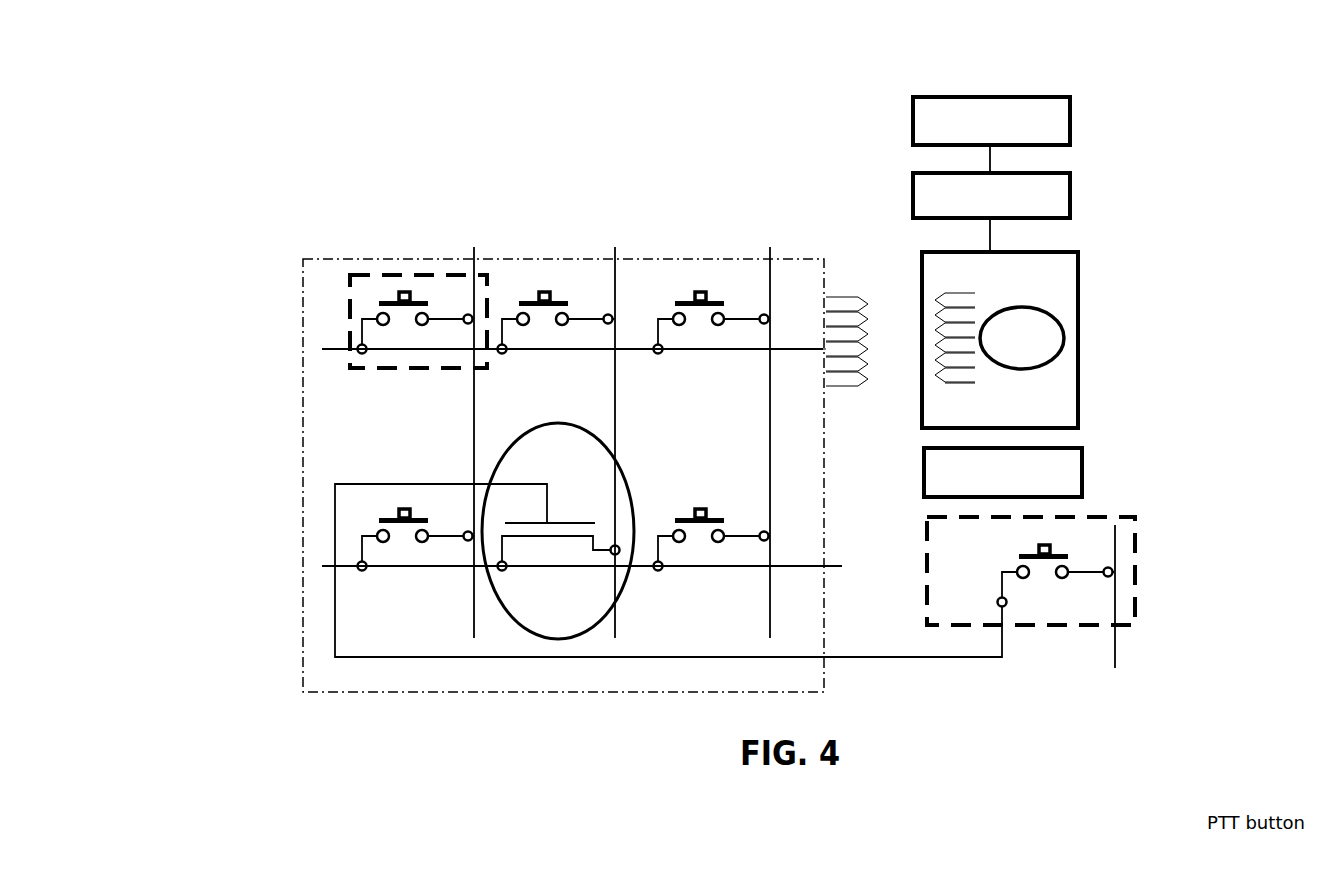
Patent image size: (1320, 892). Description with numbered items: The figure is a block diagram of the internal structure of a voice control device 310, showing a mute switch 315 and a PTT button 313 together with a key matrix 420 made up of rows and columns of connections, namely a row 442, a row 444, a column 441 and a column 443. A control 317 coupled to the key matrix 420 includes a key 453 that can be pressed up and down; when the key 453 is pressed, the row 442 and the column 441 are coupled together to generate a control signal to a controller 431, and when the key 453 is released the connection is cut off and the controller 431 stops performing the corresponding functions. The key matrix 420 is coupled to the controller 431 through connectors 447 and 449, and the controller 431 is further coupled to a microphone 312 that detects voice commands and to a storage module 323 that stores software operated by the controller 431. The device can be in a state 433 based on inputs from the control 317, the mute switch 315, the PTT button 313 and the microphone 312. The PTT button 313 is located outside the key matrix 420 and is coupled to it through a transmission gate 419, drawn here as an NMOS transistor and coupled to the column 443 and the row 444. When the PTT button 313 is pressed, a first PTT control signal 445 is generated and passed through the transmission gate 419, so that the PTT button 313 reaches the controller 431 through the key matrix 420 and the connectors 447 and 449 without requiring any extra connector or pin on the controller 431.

The voice control device 310 is at (276, 62).
The key matrix 420 is at (303, 259).
The control 317 is at (395, 273).
The key 453 is at (400, 275).
The column 441 is at (480, 258).
The column 443 is at (620, 285).
The connector 447 is at (838, 322).
The row 442 is at (322, 349).
The row 444 is at (340, 566).
The first PTT control signal 445 is at (668, 571).
The transmission gate 419 is at (525, 637).
The PTT button 313 is at (1138, 585).
The storage module 323 is at (1072, 128).
The microphone 312 is at (1072, 198).
The controller 431 is at (1025, 353).
The state 433 is at (1055, 358).
The connector 449 is at (935, 355).
The mute switch 315 is at (1083, 472).